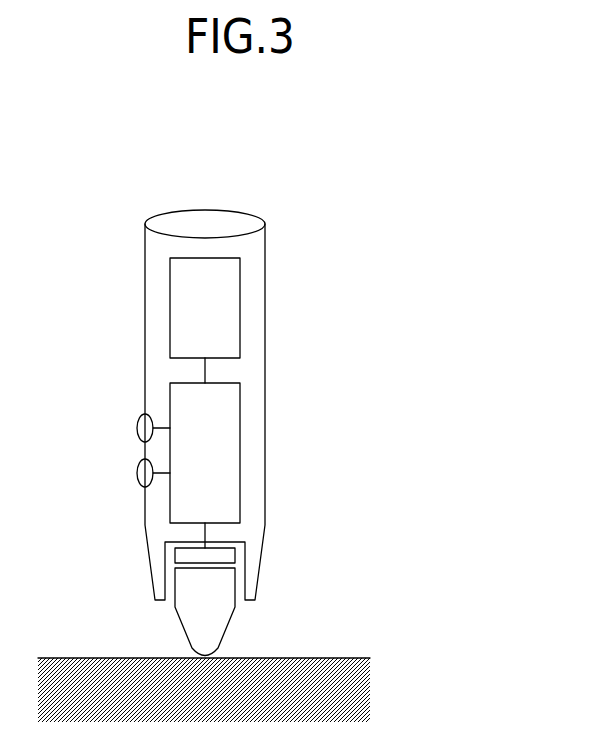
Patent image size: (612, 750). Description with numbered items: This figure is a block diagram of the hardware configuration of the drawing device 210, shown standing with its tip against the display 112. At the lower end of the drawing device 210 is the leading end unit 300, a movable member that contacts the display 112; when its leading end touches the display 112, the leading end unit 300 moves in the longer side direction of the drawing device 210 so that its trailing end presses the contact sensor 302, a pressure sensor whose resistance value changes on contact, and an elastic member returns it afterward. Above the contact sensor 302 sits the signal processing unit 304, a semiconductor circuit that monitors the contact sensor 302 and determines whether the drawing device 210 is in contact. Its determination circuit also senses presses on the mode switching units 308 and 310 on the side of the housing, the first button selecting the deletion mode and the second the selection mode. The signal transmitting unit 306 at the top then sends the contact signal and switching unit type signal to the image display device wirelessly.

The drawing device 210 is at (184, 405).
The signal transmitting unit 306 is at (245, 320).
The signal processing unit 304 is at (245, 453).
The mode switching unit 310 is at (121, 415).
The mode switching unit 308 is at (121, 462).
The contact sensor 302 is at (248, 543).
The leading end unit 300 is at (238, 612).
The display 112 is at (224, 690).